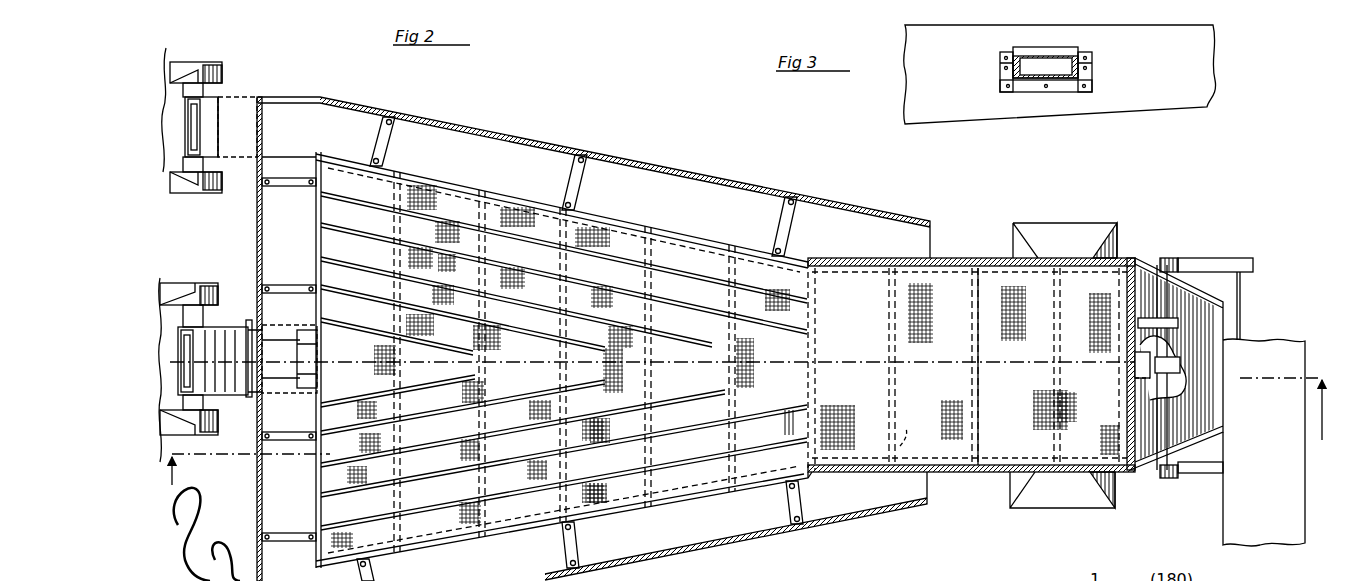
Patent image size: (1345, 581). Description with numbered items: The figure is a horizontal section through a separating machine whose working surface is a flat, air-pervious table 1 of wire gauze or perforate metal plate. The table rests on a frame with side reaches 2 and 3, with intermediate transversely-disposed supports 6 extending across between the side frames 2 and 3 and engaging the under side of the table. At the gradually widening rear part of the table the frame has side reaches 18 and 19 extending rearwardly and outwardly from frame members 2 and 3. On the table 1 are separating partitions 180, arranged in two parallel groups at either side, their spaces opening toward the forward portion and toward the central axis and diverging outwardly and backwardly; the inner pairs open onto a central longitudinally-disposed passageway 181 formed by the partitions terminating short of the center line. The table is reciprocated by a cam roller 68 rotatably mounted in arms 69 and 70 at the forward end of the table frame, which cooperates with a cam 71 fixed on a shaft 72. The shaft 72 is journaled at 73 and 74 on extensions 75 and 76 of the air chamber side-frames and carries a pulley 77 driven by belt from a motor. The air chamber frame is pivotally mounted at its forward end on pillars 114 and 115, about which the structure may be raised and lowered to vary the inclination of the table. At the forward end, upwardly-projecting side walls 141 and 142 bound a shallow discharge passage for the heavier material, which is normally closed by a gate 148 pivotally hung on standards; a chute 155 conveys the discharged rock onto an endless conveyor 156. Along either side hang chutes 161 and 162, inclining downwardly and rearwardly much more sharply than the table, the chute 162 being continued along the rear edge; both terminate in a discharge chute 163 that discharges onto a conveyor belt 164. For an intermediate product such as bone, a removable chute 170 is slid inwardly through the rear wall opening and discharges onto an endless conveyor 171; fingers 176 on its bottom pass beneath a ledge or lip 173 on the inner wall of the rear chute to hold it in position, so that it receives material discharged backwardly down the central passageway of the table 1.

In FIG. 2, the table 1 is at (740, 423).
In FIG. 2, the side reach of frame 2 is at (856, 270).
In FIG. 2, the side reach of frame 3 is at (900, 464).
In FIG. 2, the transversely-disposed supports 6 is at (650, 306).
In FIG. 2, the rear side reach of frame 18 is at (662, 238).
In FIG. 2, the rear side reach of frame 19 is at (664, 490).
In FIG. 2, the cam roller 68 is at (1135, 365).
In FIG. 2, the arm 69 is at (1140, 345).
In FIG. 2, the arm 70 is at (1138, 398).
In FIG. 2, the cam 71 is at (1180, 365).
In FIG. 2, the shaft 72 is at (1175, 345).
In FIG. 2, the journal 73 is at (1163, 262).
In FIG. 2, the journal 74 is at (1163, 478).
In FIG. 2, the extension of side-frame 75 is at (1210, 262).
In FIG. 2, the extension of side-frame 76 is at (1196, 472).
In FIG. 2, the pulley 77 is at (1178, 322).
In FIG. 2, the pillar 114 is at (1082, 200).
In FIG. 2, the pillar 115 is at (1060, 486).
In FIG. 2, the side wall 141 is at (963, 258).
In FIG. 2, the side wall 142 is at (952, 472).
In FIG. 2, the gate 148 is at (1218, 438).
In FIG. 2, the chute 155 is at (1200, 412).
In FIG. 2, the endless conveyor 156 is at (1226, 517).
In FIG. 2, the chute 161 is at (705, 197).
In FIG. 2, the chute 162 is at (740, 522).
In FIG. 3, the chute 162 is at (1155, 14).
In FIG. 2, the discharge chute 163 is at (236, 98).
In FIG. 2, the conveyor belt 164 is at (165, 64).
In FIG. 2, the removable chute 170 is at (222, 332).
In FIG. 3, the removable chute 170 is at (1048, 50).
In FIG. 2, the endless conveyor 171 is at (172, 320).
In FIG. 2, the ledge or lip 173 is at (316, 360).
In FIG. 2, the fingers 176 is at (292, 344).
In FIG. 2, the separating partitions 180 is at (520, 345).
In FIG. 2, the central passageway 181 is at (645, 368).